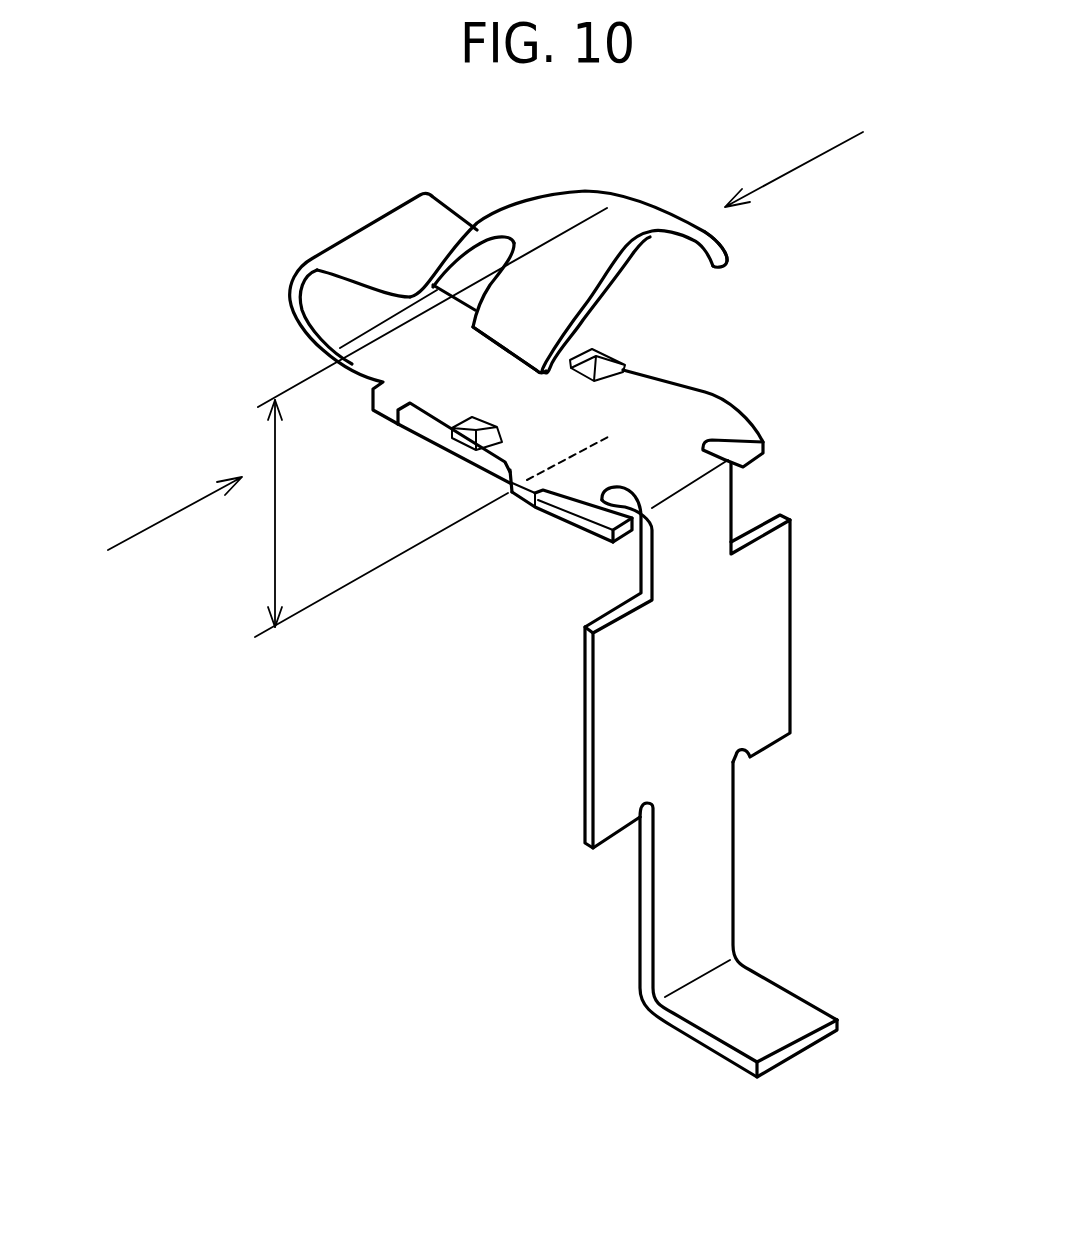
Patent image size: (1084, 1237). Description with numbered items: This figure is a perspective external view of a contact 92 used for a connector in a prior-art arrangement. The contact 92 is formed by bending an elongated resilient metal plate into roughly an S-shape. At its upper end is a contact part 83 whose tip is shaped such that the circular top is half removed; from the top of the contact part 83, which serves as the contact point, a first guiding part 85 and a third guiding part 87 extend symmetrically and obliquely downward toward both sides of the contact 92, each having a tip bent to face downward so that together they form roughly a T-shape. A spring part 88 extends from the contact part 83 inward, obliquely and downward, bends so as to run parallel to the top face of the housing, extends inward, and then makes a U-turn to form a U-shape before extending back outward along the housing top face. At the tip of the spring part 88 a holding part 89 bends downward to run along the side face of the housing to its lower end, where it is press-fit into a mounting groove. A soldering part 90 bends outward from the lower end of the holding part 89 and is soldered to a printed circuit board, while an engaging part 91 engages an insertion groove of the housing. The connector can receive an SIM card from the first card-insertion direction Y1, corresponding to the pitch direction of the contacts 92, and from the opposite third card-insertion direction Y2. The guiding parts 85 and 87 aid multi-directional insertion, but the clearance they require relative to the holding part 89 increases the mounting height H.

The contact part 83 is at (544, 217).
The first guiding part 85 is at (513, 323).
The third guiding part 87 is at (724, 234).
The spring part 88 is at (294, 313).
The holding part 89 is at (667, 403).
The soldering part 90 is at (772, 1007).
The engaging part 91 is at (773, 693).
The contact 92 is at (800, 285).
The mounting height H is at (381, 518).
The first card-insertion direction Y1 is at (152, 532).
The third card-insertion direction Y2 is at (818, 155).